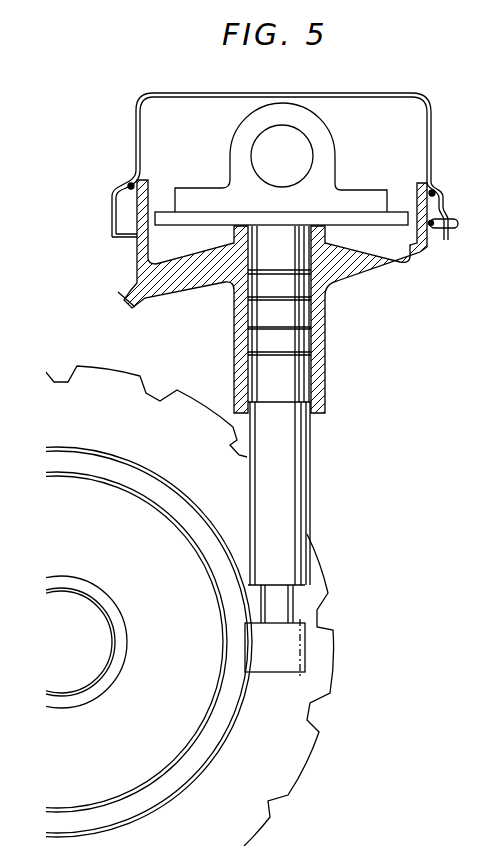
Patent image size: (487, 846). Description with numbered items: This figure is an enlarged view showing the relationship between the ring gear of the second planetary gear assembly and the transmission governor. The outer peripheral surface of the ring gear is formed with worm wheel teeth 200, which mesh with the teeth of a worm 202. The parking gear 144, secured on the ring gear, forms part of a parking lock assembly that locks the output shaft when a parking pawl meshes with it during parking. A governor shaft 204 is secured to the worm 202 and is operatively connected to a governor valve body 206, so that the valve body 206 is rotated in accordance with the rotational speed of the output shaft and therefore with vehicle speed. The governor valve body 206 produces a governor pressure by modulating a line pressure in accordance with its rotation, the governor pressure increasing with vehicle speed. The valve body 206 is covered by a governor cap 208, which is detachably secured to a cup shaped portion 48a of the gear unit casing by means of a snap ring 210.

The cup shaped portion of the gear unit casing 48a is at (136, 265).
The parking gear 144 is at (330, 573).
The worm wheel teeth 200 is at (240, 720).
The worm 202 is at (304, 650).
The governor shaft 204 is at (298, 495).
The governor valve body 206 is at (327, 123).
The governor cap 208 is at (400, 95).
The snap ring 210 is at (452, 219).